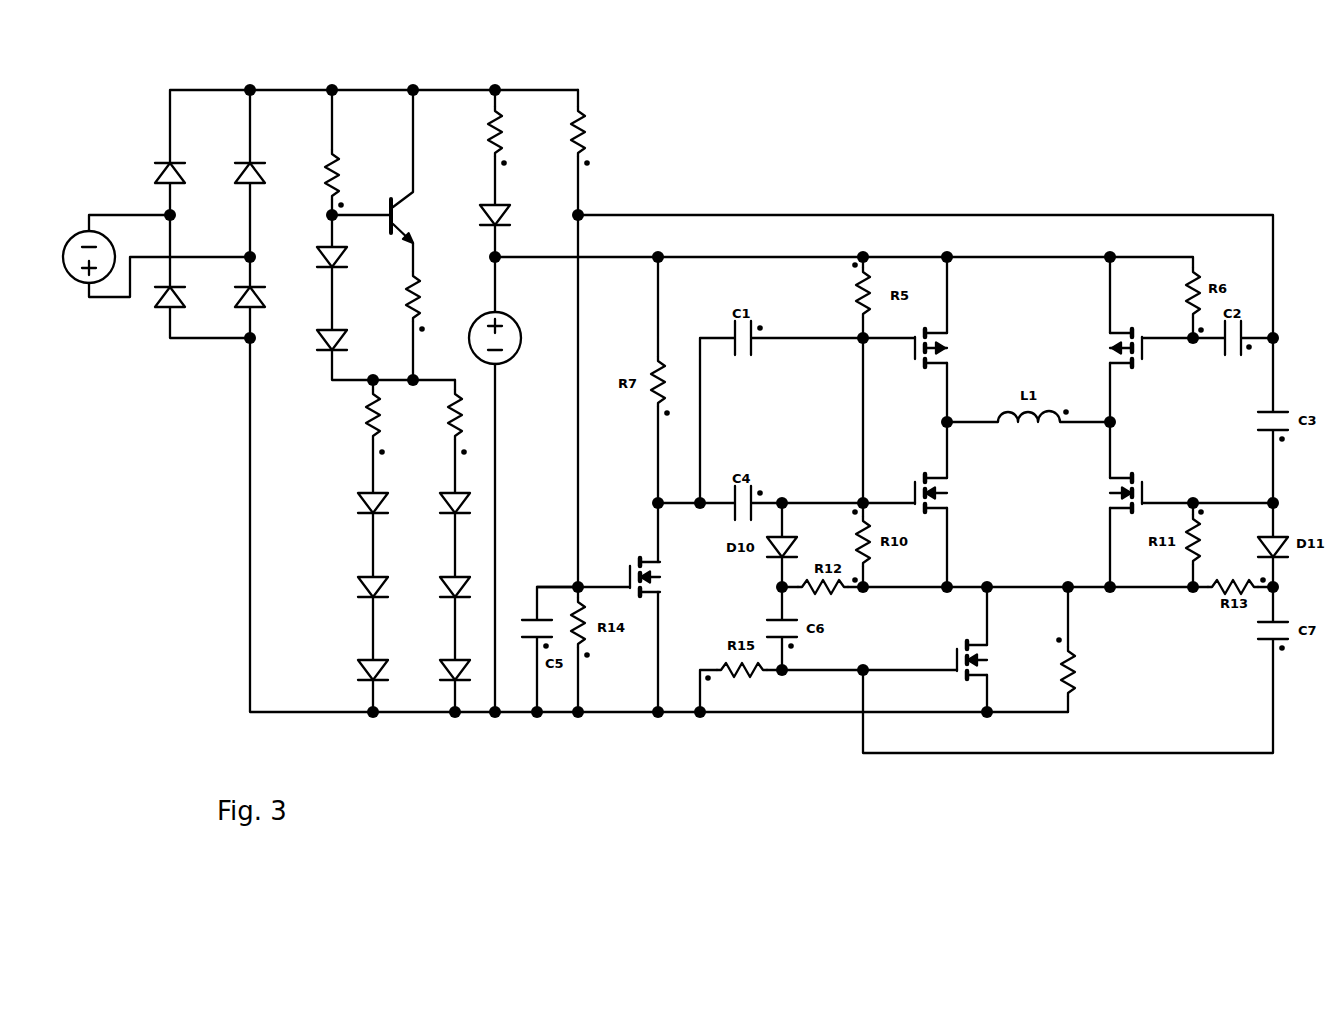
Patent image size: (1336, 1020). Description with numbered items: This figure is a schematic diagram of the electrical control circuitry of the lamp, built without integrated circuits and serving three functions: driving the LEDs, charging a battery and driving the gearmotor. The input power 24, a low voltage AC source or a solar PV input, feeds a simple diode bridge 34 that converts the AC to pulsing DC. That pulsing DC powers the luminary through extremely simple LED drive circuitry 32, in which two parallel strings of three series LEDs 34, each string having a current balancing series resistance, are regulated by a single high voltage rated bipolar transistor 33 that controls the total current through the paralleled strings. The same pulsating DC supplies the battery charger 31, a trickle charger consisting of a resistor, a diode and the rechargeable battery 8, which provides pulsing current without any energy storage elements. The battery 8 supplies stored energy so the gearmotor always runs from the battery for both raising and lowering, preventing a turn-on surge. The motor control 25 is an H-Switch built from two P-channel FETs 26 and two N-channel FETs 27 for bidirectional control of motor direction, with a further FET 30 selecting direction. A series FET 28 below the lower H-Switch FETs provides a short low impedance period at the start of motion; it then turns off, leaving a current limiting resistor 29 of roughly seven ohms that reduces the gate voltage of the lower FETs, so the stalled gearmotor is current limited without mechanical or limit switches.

The rechargeable battery 8 is at (520, 320).
The input power V1 24 is at (120, 240).
The motor control 25 is at (925, 253).
The P-channel FETs 26 is at (1082, 328).
The N-channel FETs 27 is at (1080, 475).
The series FET 28 is at (940, 633).
The current limiting resistor 29 is at (1093, 652).
The motor direction FET 30 is at (608, 560).
The battery charger 31 is at (546, 139).
The luminary driver circuitry 32 is at (386, 240).
The bipolar transistor 33 is at (420, 203).
The diode bridge and LED strings 34 is at (312, 421).